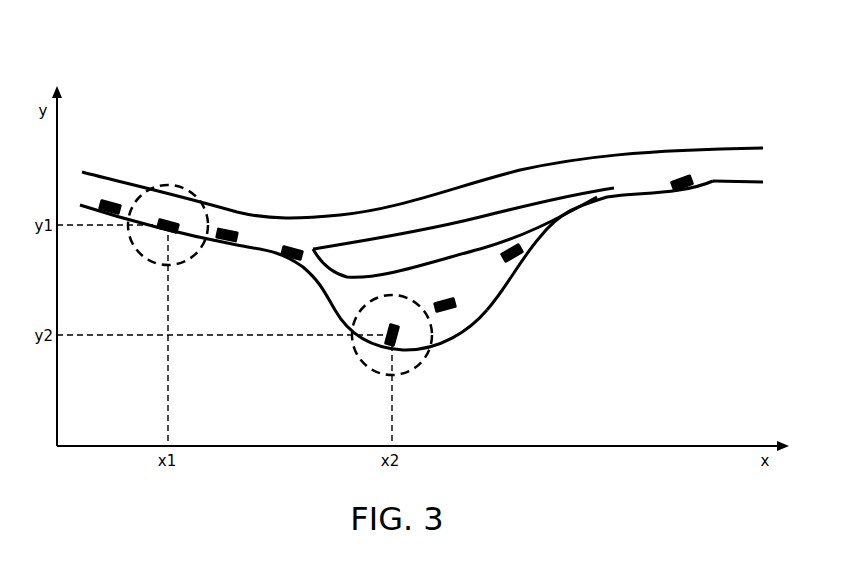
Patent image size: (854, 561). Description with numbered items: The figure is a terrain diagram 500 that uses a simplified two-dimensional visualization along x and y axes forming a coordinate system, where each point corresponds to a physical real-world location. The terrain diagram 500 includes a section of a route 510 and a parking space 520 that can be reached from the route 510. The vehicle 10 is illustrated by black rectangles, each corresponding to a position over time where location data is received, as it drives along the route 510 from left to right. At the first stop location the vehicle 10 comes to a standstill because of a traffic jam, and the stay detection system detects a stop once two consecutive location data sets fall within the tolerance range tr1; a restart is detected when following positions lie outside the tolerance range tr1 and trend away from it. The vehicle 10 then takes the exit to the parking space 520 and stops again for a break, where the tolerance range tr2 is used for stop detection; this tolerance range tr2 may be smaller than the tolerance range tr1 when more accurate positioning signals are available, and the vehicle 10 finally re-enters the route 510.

The terrain diagram 500 is at (421, 254).
The route 510 is at (490, 195).
The parking space 520 is at (487, 292).
The vehicle 10 is at (688, 192).
The tolerance range tr1 is at (188, 262).
The tolerance range tr2 is at (410, 372).